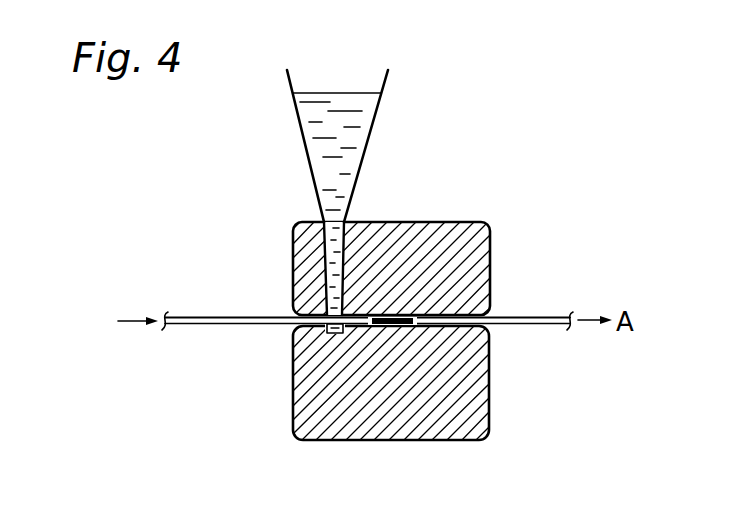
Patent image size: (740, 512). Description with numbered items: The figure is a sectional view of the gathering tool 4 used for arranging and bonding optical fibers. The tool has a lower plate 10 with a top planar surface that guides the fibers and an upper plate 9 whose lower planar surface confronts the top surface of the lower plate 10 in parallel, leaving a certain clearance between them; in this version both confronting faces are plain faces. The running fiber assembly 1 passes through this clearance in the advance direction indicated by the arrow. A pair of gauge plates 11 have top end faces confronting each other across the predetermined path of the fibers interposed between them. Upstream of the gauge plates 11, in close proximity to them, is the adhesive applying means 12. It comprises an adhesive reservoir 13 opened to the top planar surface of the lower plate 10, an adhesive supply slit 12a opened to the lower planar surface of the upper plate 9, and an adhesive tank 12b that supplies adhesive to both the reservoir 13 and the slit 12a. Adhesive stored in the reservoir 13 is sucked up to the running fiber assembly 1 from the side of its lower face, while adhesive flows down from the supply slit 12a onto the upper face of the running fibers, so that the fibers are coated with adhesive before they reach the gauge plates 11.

The fiber assembly 1 is at (200, 326).
The gathering tool 4 is at (420, 307).
The upper plate 9 is at (490, 268).
The lower plate 10 is at (489, 395).
The gauge plates 11 is at (392, 315).
The adhesive applying means 12 is at (341, 83).
The adhesive supply slit 12a is at (338, 247).
The adhesive tank 12b is at (365, 128).
The adhesive reservoir 13 is at (341, 334).